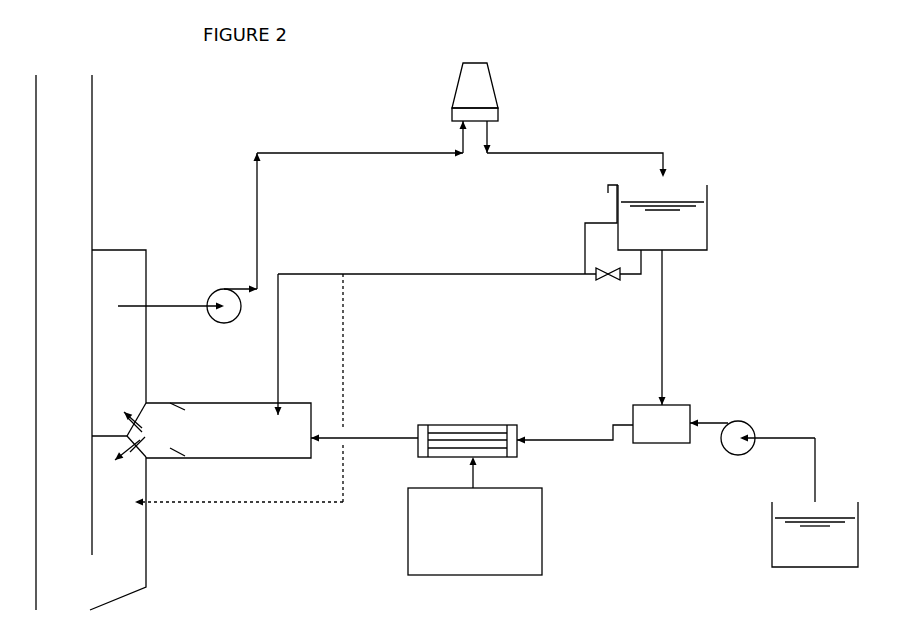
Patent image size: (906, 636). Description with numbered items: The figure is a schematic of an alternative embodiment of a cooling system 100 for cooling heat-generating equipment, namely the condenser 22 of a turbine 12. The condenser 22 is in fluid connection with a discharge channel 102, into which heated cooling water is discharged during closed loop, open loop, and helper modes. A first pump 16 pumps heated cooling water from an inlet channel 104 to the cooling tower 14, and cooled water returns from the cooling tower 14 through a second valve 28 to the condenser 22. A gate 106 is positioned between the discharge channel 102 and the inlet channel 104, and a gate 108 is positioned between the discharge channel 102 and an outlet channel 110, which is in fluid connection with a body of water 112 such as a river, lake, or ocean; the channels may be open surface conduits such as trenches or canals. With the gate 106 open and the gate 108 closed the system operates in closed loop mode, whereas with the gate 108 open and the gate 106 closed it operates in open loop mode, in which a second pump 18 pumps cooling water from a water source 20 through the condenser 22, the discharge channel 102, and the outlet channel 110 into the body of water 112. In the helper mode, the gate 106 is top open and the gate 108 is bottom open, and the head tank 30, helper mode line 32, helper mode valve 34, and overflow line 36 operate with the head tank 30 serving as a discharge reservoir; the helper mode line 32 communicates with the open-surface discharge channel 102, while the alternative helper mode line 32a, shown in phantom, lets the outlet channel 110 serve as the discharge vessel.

The cooling system 100 is at (685, 77).
The turbine 12 is at (465, 565).
The cooling tower 14 is at (467, 96).
The first pump 16 is at (218, 291).
The second pump 18 is at (750, 426).
The water source 20 is at (807, 555).
The condenser 22 is at (468, 425).
The second valve 28 is at (640, 405).
The head tank 30 is at (654, 239).
The helper mode line 32 is at (388, 272).
The helper mode line 32a is at (345, 352).
The helper mode valve 34 is at (615, 280).
The overflow line 36 is at (584, 240).
The discharge channel 102 is at (211, 444).
The inlet channel 104 is at (105, 358).
The gate 106 is at (170, 405).
The gate 108 is at (172, 457).
The outlet channel 110 is at (105, 530).
The body of water 112 is at (54, 380).